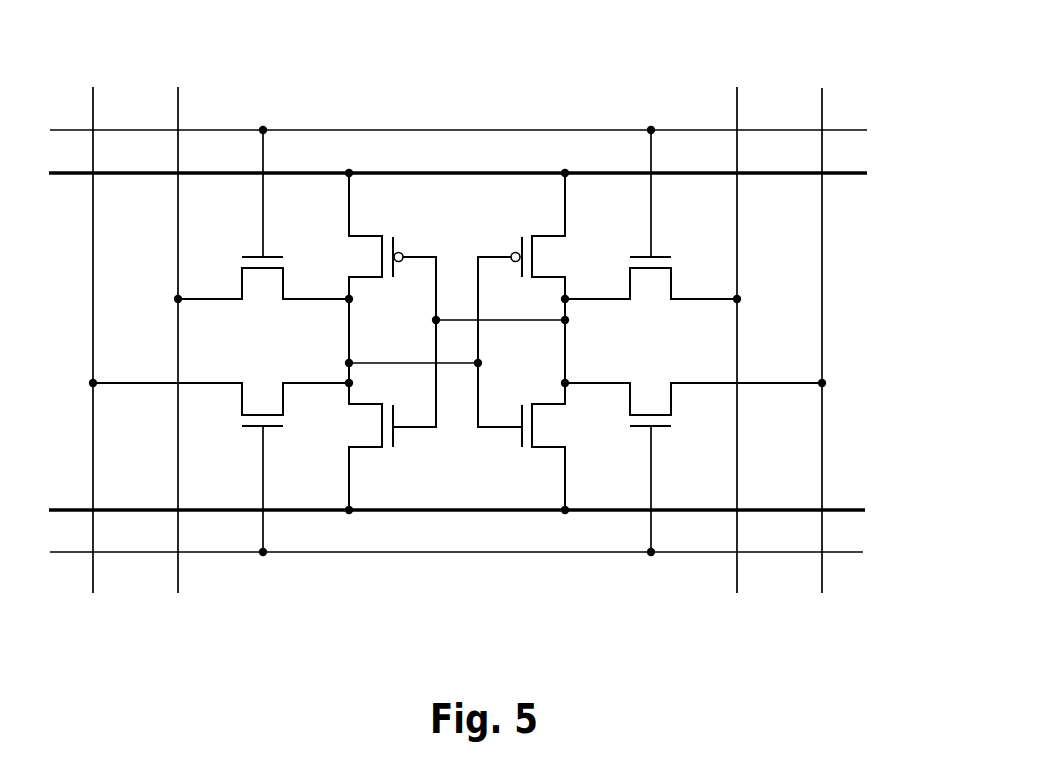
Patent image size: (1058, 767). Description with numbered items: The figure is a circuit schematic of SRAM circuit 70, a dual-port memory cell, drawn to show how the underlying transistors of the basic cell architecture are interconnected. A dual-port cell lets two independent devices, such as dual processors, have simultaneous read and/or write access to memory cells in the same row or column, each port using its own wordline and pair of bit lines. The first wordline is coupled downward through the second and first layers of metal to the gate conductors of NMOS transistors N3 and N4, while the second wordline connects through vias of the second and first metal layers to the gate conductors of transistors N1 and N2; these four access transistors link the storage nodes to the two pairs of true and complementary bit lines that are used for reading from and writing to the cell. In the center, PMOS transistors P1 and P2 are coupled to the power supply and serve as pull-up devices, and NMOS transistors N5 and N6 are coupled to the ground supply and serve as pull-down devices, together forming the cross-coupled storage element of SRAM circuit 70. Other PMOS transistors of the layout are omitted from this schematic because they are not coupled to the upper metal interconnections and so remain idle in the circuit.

The SRAM circuit 70 is at (823, 43).
The PMOS transistor P1 is at (376, 246).
The PMOS transistor P2 is at (540, 268).
The NMOS transistor N1 is at (221, 455).
The NMOS transistor N2 is at (693, 451).
The NMOS transistor N3 is at (651, 232).
The NMOS transistor N4 is at (263, 232).
The NMOS transistor N5 is at (376, 405).
The NMOS transistor N6 is at (542, 405).